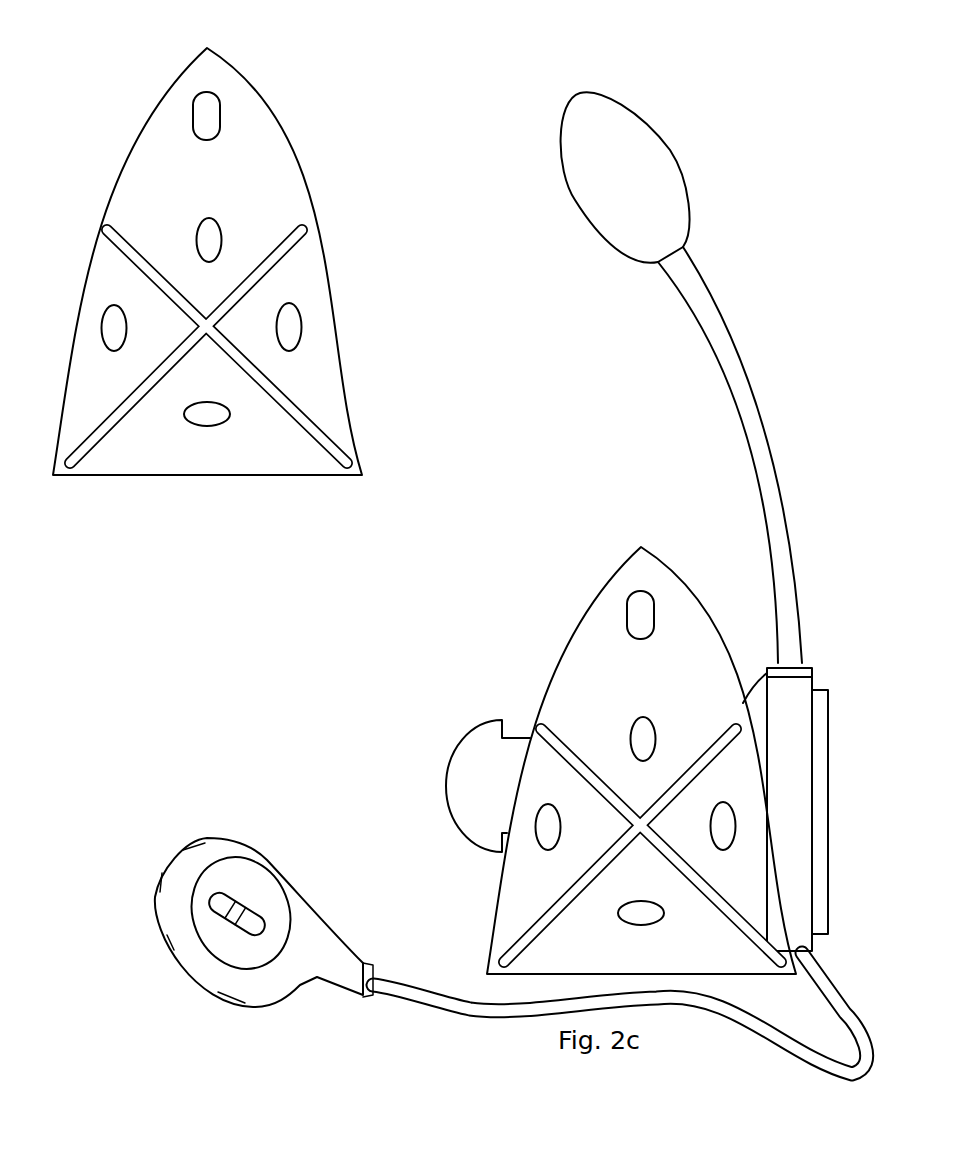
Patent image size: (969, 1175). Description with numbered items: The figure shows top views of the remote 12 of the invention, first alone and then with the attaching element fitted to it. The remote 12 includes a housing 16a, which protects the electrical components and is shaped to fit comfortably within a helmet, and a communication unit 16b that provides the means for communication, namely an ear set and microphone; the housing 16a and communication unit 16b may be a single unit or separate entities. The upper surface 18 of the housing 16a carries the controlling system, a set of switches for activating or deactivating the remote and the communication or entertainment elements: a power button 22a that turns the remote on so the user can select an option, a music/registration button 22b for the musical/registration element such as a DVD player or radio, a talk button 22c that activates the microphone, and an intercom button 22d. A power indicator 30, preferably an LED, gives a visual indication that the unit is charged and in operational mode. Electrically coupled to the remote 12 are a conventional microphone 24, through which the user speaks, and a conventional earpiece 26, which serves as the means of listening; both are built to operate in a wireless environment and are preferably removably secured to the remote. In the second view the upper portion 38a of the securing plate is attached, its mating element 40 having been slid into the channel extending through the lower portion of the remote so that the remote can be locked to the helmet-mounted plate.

In FIG. 2b, the remote 12 is at (233, 47).
In FIG. 2b, the housing 16a is at (158, 128).
In FIG. 2c, the housing 16a is at (665, 583).
In FIG. 2c, the communication unit 16b is at (828, 706).
In FIG. 2b, the upper surface 18 is at (140, 163).
In FIG. 2b, the power button 22a is at (203, 427).
In FIG. 2b, the music/registration button 22b is at (101, 337).
In FIG. 2b, the talk button 22c is at (220, 220).
In FIG. 2b, the intercom button 22d is at (288, 350).
In FIG. 2c, the microphone 24 is at (722, 371).
In FIG. 2c, the earpiece 26 is at (400, 993).
In FIG. 2b, the power indicator 30 is at (220, 110).
In FIG. 2c, the upper portion 38a is at (476, 709).
In FIG. 2c, the mating element 40 is at (458, 815).